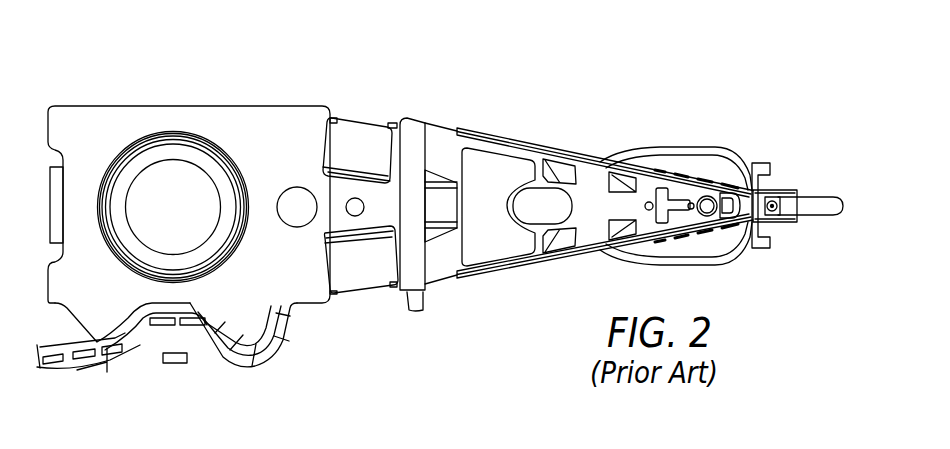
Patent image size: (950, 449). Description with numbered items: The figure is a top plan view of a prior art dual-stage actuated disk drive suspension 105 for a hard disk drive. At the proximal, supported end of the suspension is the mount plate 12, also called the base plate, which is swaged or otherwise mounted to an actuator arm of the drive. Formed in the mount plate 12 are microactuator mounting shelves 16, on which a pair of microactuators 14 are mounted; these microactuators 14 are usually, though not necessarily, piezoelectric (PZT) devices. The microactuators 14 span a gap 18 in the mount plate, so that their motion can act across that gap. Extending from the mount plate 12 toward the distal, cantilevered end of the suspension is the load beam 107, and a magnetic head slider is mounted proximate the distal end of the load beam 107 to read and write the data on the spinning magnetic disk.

The mount plate 12 is at (127, 330).
The microactuators 14 is at (352, 135).
The microactuator mounting shelves 16 is at (333, 118).
The gap 18 is at (443, 133).
The disk drive suspension 105 is at (450, 89).
The load beam 107 is at (533, 135).